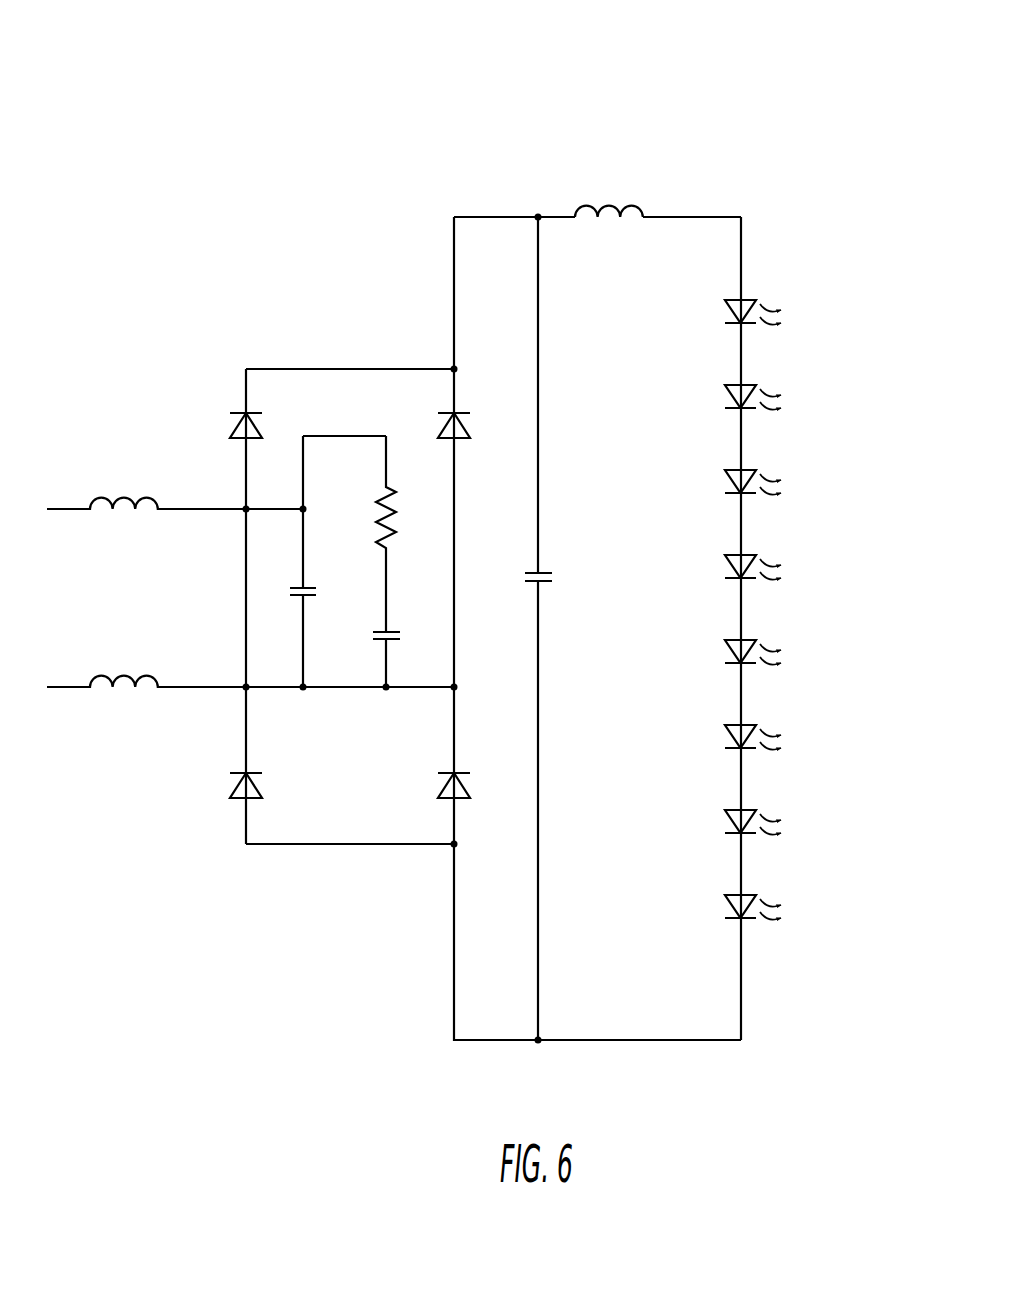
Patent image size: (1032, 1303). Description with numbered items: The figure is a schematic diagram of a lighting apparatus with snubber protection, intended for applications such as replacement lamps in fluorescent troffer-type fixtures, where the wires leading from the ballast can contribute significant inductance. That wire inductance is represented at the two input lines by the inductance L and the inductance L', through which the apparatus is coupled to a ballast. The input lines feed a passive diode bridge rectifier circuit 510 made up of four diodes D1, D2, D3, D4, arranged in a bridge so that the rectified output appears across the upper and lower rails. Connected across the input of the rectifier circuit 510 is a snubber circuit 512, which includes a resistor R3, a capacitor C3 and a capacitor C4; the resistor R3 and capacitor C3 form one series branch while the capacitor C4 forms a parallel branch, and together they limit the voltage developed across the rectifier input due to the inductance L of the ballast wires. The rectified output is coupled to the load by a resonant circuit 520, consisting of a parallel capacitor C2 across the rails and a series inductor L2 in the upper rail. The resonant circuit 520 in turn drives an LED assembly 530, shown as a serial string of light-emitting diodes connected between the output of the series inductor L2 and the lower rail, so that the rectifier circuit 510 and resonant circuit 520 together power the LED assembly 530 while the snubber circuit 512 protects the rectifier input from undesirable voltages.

The rectifier circuit 510 is at (264, 341).
The snubber circuit 512 is at (347, 731).
The resonant circuit 520 is at (757, 97).
The LED assembly 530 is at (849, 296).
The inductance L is at (146, 483).
The input inductor L' is at (146, 661).
The series inductor L2 is at (609, 191).
The diode D1 is at (229, 428).
The diode D2 is at (472, 428).
The diode D3 is at (230, 790).
The diode D4 is at (474, 790).
The resistor R3 is at (370, 534).
The parallel capacitor C2 is at (553, 628).
The capacitor C3 is at (371, 654).
The capacitor C4 is at (316, 561).